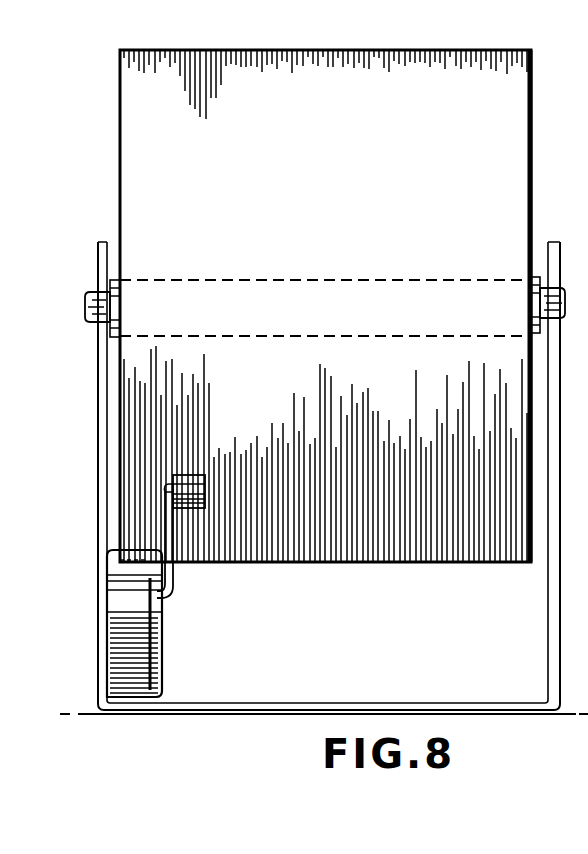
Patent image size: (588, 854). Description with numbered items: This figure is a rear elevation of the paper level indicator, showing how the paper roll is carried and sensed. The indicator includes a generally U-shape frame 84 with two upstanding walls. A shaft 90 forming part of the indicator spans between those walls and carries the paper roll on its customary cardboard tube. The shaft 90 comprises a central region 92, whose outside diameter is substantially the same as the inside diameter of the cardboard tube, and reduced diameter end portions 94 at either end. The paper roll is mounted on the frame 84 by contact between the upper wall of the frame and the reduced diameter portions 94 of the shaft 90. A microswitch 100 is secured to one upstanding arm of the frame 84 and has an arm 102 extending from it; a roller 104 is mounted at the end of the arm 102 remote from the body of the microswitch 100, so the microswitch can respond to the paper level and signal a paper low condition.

The U-shape frame 84 is at (98, 647).
The shaft 90 is at (78, 296).
The central region 92 is at (180, 279).
The reduced diameter end portions 94 is at (86, 304).
The microswitch 100 is at (162, 640).
The arm 102 is at (170, 546).
The roller 104 is at (186, 484).